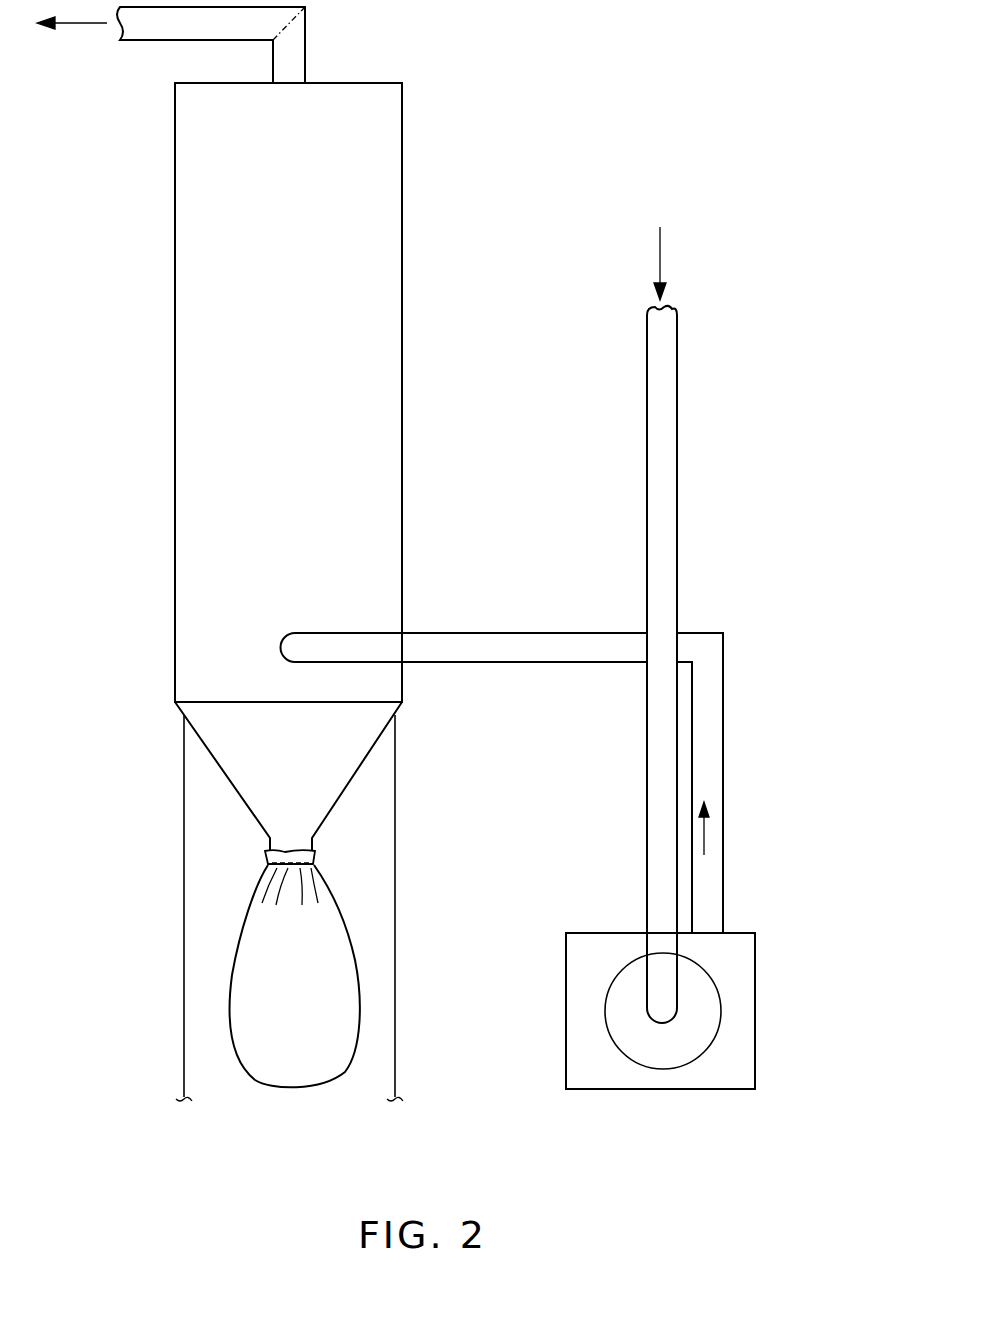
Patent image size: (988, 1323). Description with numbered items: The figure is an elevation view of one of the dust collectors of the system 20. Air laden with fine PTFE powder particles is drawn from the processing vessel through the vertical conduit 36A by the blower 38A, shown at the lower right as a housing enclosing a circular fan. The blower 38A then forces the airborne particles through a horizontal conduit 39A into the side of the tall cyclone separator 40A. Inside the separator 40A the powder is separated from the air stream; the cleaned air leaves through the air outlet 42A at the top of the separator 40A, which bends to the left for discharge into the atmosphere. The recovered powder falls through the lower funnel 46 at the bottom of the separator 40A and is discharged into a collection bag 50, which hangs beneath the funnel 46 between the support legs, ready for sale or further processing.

The dust collection system 20 is at (852, 628).
The conduit 36A is at (677, 417).
The blower 38A is at (757, 1007).
The transfer pipe 39A is at (509, 633).
The cyclone separator 40A is at (187, 422).
The air outlet 42A is at (307, 32).
The lower funnel 46 is at (222, 742).
The collection bag 50 is at (252, 970).